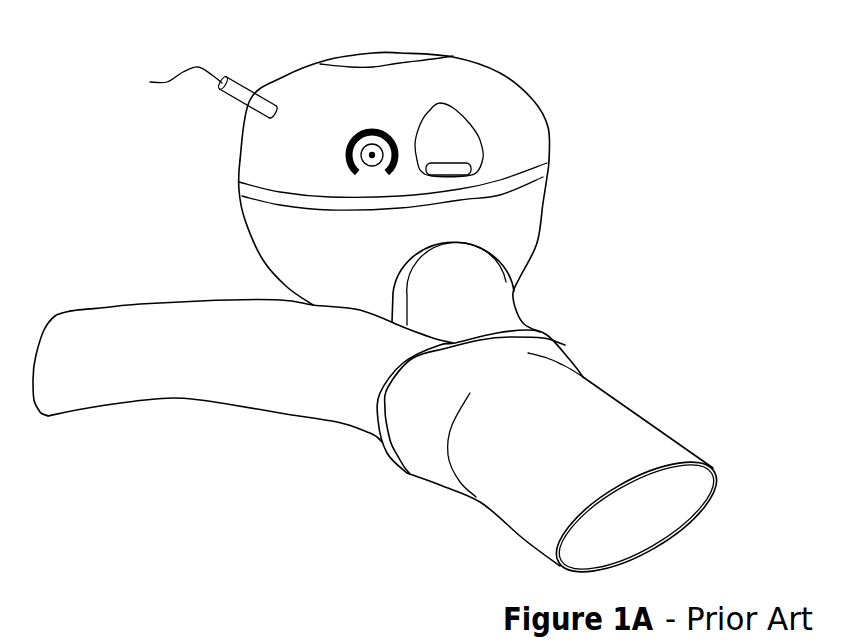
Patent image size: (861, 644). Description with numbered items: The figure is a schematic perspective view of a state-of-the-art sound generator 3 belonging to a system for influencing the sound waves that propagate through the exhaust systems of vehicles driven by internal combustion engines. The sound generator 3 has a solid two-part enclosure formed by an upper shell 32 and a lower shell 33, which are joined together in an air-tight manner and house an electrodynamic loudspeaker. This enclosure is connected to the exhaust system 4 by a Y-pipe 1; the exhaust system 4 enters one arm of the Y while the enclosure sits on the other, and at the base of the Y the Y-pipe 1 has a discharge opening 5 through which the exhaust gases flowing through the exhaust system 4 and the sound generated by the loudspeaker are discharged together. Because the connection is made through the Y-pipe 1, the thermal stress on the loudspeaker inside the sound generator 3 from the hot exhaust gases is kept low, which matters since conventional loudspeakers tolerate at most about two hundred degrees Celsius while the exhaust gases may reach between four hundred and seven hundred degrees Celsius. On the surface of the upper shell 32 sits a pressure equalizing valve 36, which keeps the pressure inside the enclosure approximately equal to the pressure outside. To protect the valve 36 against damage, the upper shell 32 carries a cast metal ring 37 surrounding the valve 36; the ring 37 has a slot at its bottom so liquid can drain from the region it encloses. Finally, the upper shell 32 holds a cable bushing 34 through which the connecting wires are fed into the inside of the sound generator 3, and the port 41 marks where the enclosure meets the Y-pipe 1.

The Y-pipe 1 is at (575, 442).
The sound generator 3 is at (435, 180).
The exhaust system 4 is at (307, 402).
The discharge opening 5 is at (625, 512).
The upper shell 32 is at (500, 87).
The lower shell 33 is at (517, 222).
The cable bushing 34 is at (228, 115).
The pressure equalizing valve 36 is at (373, 147).
The cast metal ring 37 is at (346, 160).
The connection port 41 is at (502, 315).